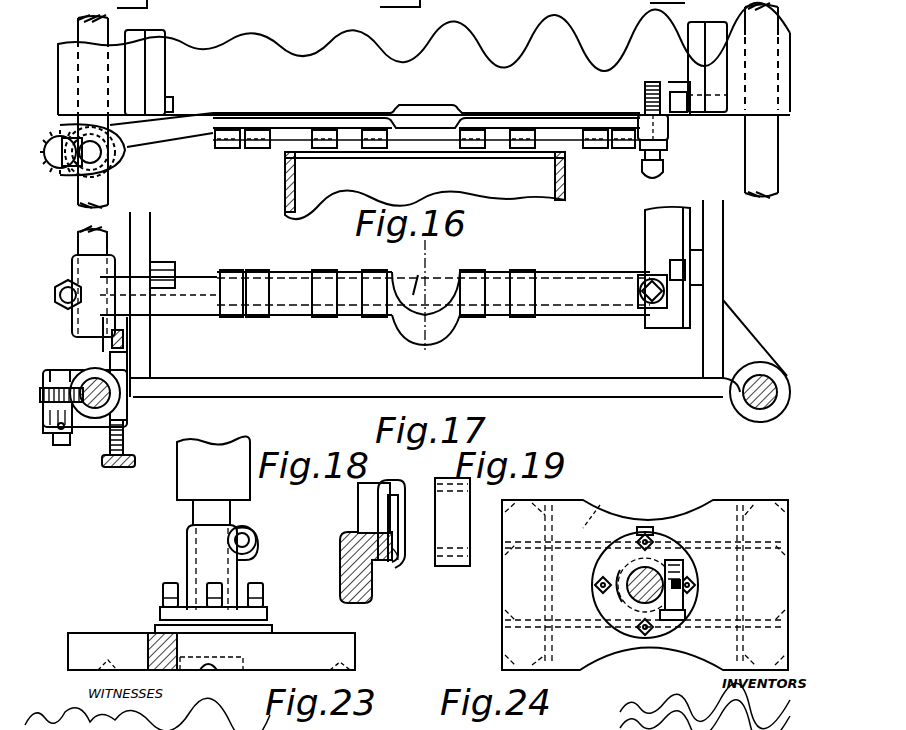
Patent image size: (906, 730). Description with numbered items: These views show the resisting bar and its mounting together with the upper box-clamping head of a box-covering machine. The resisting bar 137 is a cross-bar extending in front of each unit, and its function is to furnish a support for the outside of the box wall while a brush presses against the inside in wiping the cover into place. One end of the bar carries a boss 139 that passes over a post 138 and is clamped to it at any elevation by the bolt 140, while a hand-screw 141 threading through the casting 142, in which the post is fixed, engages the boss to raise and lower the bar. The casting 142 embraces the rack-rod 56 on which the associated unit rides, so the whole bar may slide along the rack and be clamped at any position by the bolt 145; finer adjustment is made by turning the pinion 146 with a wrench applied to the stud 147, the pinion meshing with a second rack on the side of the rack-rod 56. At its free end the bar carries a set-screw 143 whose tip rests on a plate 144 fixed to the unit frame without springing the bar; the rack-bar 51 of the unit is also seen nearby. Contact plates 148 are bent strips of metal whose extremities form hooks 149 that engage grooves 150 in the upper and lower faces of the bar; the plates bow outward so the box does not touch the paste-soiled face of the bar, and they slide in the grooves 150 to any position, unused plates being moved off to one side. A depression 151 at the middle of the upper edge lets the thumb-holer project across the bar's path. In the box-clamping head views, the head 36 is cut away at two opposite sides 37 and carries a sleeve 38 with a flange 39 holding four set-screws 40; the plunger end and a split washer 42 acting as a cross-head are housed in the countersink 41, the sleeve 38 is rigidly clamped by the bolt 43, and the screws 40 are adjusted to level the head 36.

In FIG. 23, the box-clamping head 36 is at (345, 640).
In FIG. 24, the box-clamping head 36 is at (645, 585).
In FIG. 24, the cut-away sides 37 is at (663, 522).
In FIG. 23, the sleeve 38 is at (190, 538).
In FIG. 23, the flange 39 is at (165, 607).
In FIG. 23, the set-screws 40 is at (263, 592).
In FIG. 23, the countersink 41 is at (236, 690).
In FIG. 23, the split washer 42 is at (230, 655).
In FIG. 24, the split washer 42 is at (628, 600).
In FIG. 23, the bolt 43 is at (262, 525).
In FIG. 24, the bolt 43 is at (688, 615).
In FIG. 16, the rack-bar 51 is at (93, 111).
In FIG. 17, the rack-rod 56 is at (110, 398).
In FIG. 16, the resisting bar 137 is at (170, 137).
In FIG. 17, the resisting bar 137 is at (195, 290).
In FIG. 18, the resisting bar 137 is at (340, 552).
In FIG. 16, the post 138 is at (105, 170).
In FIG. 17, the post 138 is at (80, 232).
In FIG. 17, the boss 139 is at (72, 262).
In FIG. 17, the bolt 140 is at (68, 305).
In FIG. 17, the hand-screw 141 is at (124, 448).
In FIG. 17, the casting 142 is at (125, 362).
In FIG. 16, the set-screw 143 is at (663, 168).
In FIG. 16, the plate 144 is at (655, 60).
In FIG. 17, the plate 144 is at (670, 267).
In FIG. 17, the bolt 145 is at (70, 358).
In FIG. 17, the pinion 146 is at (48, 432).
In FIG. 17, the stud 147 is at (66, 443).
In FIG. 16, the contact plates 148 is at (478, 135).
In FIG. 18, the contact plates 148 is at (405, 560).
In FIG. 19, the contact plates 148 is at (452, 522).
In FIG. 18, the hooks 149 is at (378, 535).
In FIG. 16, the grooves 150 is at (295, 130).
In FIG. 17, the grooves 150 is at (318, 315).
In FIG. 18, the grooves 150 is at (375, 508).
In FIG. 17, the depression 151 is at (413, 298).